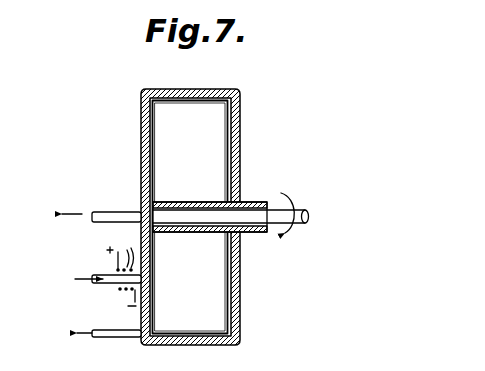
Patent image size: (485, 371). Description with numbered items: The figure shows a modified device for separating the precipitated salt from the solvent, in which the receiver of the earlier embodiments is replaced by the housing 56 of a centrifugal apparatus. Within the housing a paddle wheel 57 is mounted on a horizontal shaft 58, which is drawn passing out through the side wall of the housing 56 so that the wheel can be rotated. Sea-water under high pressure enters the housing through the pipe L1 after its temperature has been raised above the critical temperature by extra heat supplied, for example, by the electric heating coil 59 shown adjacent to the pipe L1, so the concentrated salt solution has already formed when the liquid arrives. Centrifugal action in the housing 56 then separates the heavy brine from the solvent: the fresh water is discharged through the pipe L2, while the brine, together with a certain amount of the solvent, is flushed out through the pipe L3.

The housing 56 is at (240, 125).
The paddle wheel 57 is at (215, 173).
The horizontal shaft 58 is at (268, 215).
The electric heating coil 59 is at (121, 266).
The pipe L1 is at (99, 272).
The pipe L2 is at (98, 211).
The pipe L3 is at (97, 329).